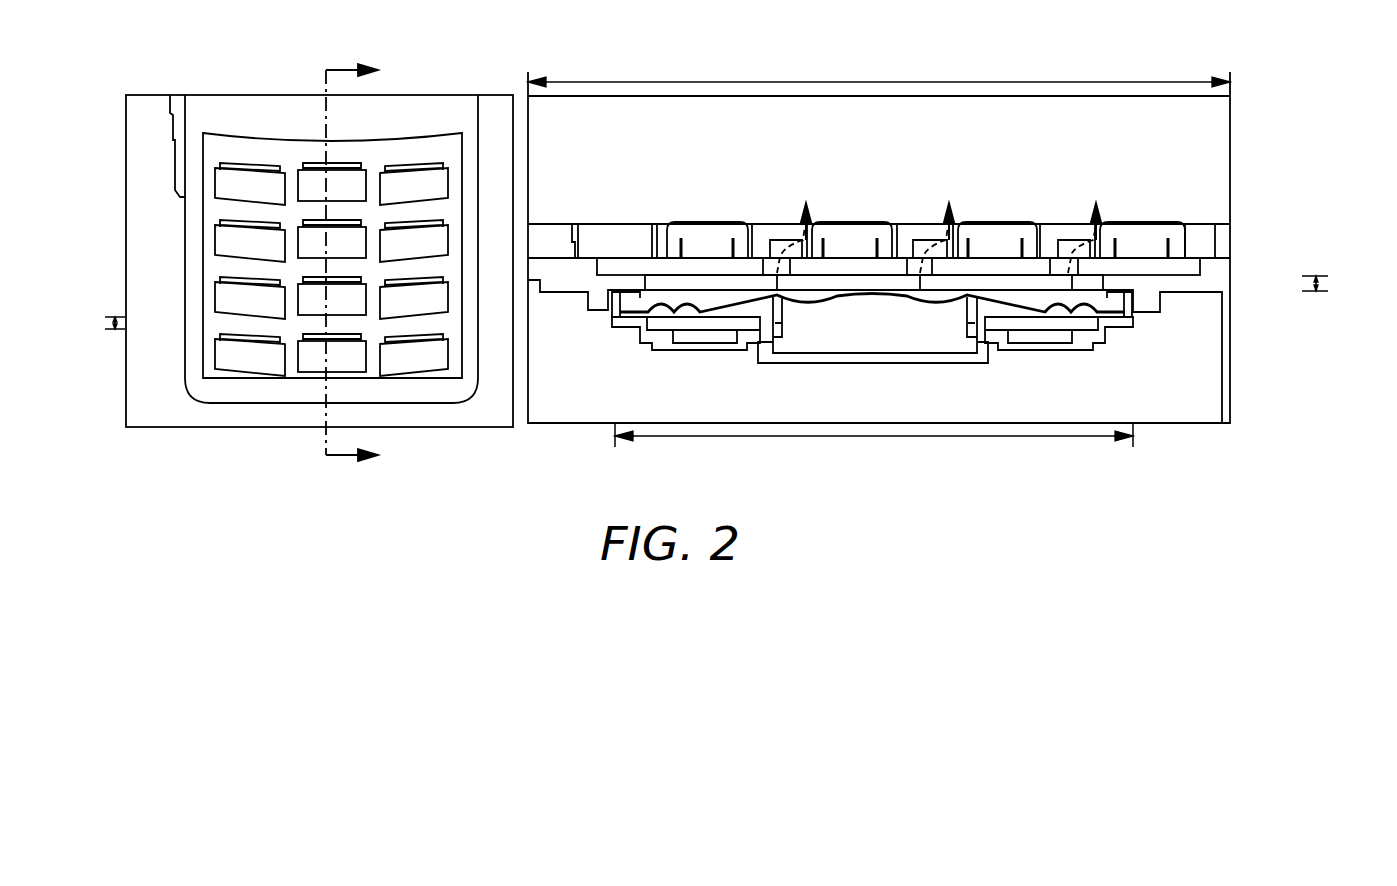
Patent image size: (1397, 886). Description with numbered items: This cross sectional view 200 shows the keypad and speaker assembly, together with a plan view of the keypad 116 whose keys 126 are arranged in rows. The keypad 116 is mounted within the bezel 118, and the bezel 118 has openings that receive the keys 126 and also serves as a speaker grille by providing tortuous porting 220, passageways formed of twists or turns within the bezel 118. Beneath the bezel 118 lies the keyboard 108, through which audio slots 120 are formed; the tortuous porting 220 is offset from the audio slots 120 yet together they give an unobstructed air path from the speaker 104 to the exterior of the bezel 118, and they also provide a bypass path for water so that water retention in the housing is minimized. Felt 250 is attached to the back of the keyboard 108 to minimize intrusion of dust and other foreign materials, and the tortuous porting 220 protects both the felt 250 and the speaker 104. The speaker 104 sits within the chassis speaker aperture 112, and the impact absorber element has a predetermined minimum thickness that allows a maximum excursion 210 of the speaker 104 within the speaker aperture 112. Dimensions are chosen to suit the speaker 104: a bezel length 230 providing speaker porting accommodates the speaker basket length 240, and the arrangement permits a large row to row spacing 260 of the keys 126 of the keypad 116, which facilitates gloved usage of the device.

The keyboard assembly 200 is at (1306, 451).
The speaker 104 is at (975, 302).
The keyboard 108 is at (602, 268).
The speaker aperture 112 is at (648, 300).
The keypad 116 is at (1215, 198).
The bezel 118 is at (765, 223).
The audio slots 120 is at (765, 269).
The keys 126 is at (352, 190).
The maximum excursion 210 is at (1328, 281).
The tortuous porting 220 is at (239, 162).
The bezel length 230 is at (1117, 80).
The speaker basket length 240 is at (873, 438).
The felt 250 is at (1104, 283).
The row to row spacing 260 is at (105, 323).